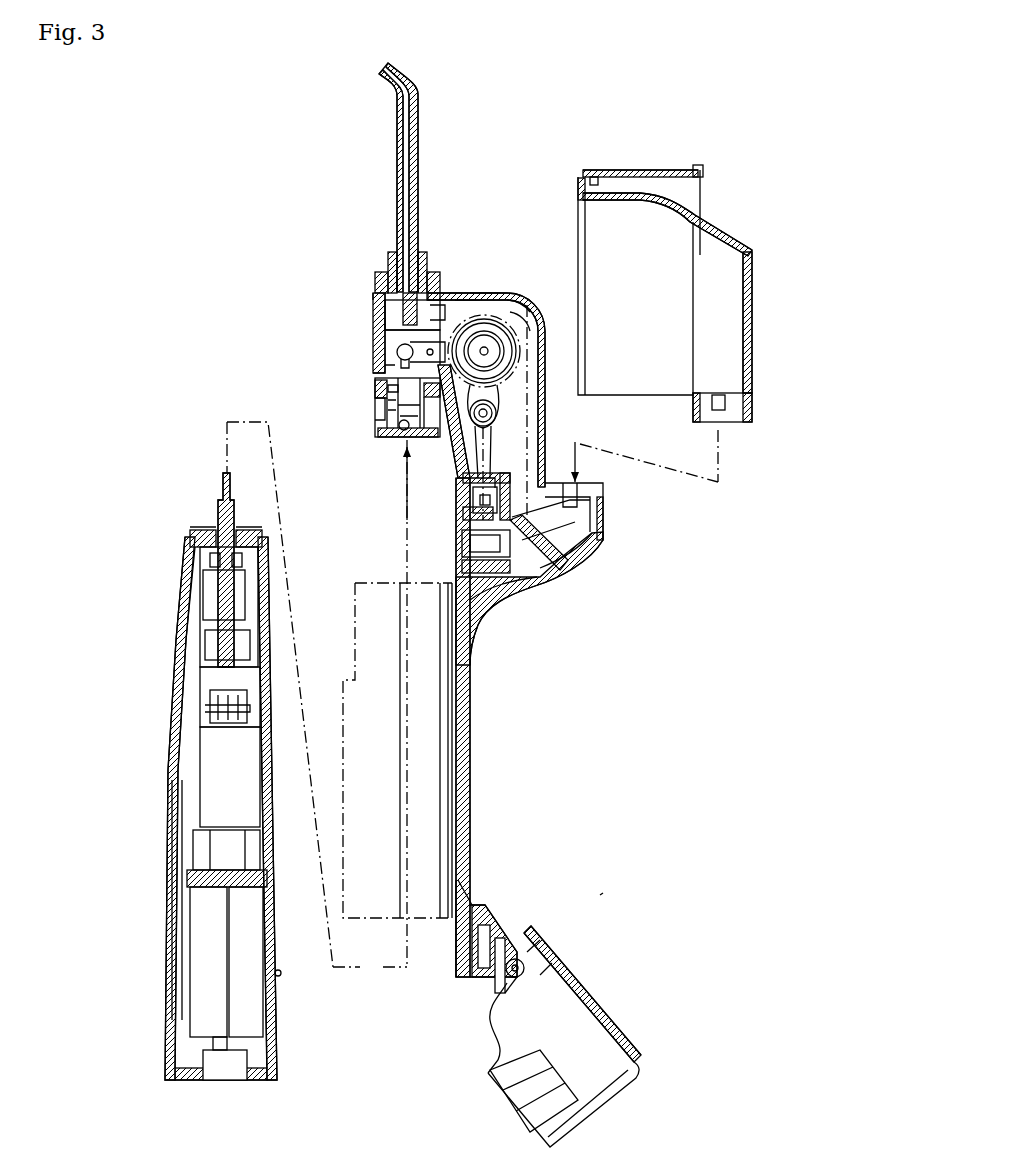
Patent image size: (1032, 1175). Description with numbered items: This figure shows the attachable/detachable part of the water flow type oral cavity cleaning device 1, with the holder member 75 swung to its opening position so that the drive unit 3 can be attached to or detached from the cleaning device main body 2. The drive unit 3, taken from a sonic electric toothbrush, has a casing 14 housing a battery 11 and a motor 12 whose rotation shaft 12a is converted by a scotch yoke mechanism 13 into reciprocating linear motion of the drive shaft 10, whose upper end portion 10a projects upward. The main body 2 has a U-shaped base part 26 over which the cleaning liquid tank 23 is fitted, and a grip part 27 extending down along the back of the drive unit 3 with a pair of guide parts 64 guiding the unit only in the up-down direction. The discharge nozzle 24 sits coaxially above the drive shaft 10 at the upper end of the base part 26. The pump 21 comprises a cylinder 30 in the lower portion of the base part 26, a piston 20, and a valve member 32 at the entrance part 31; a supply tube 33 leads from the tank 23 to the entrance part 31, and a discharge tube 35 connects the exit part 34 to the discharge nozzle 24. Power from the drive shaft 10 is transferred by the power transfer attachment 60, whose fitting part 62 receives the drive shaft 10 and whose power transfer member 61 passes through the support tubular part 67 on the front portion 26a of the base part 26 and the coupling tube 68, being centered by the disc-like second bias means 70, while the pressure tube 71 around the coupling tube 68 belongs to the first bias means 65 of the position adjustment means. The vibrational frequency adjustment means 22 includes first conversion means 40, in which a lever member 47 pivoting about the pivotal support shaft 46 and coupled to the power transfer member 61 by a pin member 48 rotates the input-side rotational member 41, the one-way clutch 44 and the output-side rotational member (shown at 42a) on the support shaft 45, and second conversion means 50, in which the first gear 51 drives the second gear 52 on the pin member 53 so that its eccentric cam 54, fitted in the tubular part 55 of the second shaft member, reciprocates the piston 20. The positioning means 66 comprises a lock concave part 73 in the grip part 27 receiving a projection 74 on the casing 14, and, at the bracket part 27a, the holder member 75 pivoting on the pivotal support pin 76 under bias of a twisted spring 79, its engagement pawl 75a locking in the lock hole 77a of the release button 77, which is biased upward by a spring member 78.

The water flow type oral cavity cleaning device 1 is at (703, 147).
The cleaning device main body 2 is at (320, 193).
The drive unit 3 is at (160, 900).
The drive shaft 10 is at (205, 588).
The drive shaft 10a is at (218, 520).
The battery 11 is at (198, 960).
The motor 12 is at (210, 775).
The rotation shaft 12a is at (222, 708).
The scotch yoke mechanism 13 is at (205, 695).
The casing 14 is at (175, 860).
The piston 20 is at (458, 518).
The pump 21 is at (520, 493).
The vibrational frequency adjustment means 22 is at (485, 300).
The cleaning liquid tank 23 is at (717, 217).
The discharge nozzle 24 is at (418, 148).
The base part 26 is at (575, 563).
The front portion 26a is at (375, 330).
The grip part 27 is at (470, 782).
The bracket part 27a is at (520, 935).
The cylinder 30 is at (458, 503).
The entrance part 31 is at (458, 567).
The valve member 32 is at (458, 542).
The supply tube 33 is at (537, 573).
The exit part 34 is at (508, 590).
The discharge tube 35 is at (463, 307).
The first conversion means 40 is at (521, 307).
The input-side rotational member 41 is at (520, 312).
The rotation shaft 42a is at (488, 352).
The one-way clutch 44 is at (503, 368).
The support shaft 45 is at (503, 342).
The pivotal support shaft 46 is at (437, 307).
The lever member 47 is at (392, 262).
The pin member 48 is at (377, 282).
The second conversion means 50 is at (503, 432).
The first gear 51 is at (505, 292).
The second gear 52 is at (412, 458).
The pin member 53 is at (473, 424).
The eccentric cam 54 is at (505, 400).
The tubular part 55 is at (496, 413).
The power transfer attachment 60 is at (385, 930).
The power transfer member 61 is at (398, 362).
The fitting part 62 is at (405, 432).
The guide parts 64 is at (345, 715).
The first bias means 65 is at (353, 443).
The positioning means 66 is at (603, 893).
The support tubular part 67 is at (385, 388).
The coupling tube 68 is at (381, 407).
The second bias means 70 is at (380, 423).
The pressure tube 71 is at (380, 413).
The lock concave part 73 is at (458, 883).
The projection 74 is at (281, 975).
The holder member 75 is at (607, 1013).
The engagement pawl 75a is at (550, 967).
The pivotal support pin 76 is at (537, 950).
The release button 77 is at (476, 905).
The lock hole 77a is at (510, 987).
The spring member 78 is at (503, 945).
The twisted spring 79 is at (500, 998).